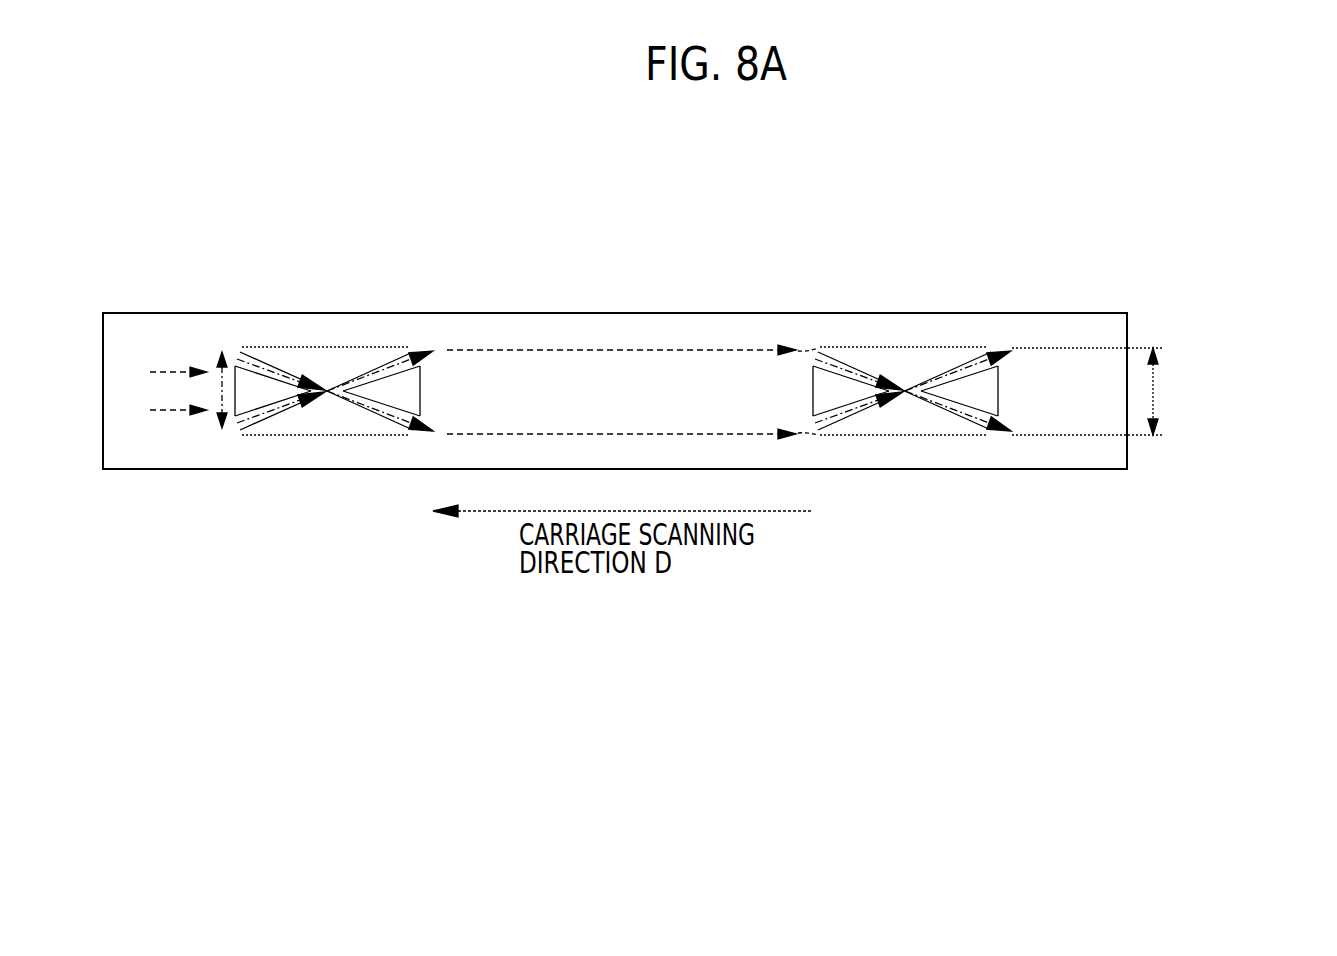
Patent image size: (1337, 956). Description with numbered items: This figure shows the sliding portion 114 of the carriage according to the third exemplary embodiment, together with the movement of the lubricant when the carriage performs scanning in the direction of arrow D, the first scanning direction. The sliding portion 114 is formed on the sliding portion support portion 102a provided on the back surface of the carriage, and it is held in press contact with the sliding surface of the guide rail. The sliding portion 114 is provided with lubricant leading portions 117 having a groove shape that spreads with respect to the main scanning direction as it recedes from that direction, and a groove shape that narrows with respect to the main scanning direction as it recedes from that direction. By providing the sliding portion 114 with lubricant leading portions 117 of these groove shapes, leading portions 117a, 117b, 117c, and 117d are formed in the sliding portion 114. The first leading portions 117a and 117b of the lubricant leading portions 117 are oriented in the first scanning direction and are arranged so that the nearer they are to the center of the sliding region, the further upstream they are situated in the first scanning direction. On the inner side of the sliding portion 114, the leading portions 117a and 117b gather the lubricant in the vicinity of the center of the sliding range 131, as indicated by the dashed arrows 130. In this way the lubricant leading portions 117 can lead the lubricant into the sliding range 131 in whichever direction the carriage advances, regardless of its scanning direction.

The sliding portion support portion 102a is at (788, 333).
The sliding portion 114 is at (245, 368).
The lubricant leading portions 117 is at (622, 391).
The first leading portion 117a is at (264, 350).
The first leading portion 117b is at (282, 422).
The leading portion 117c is at (378, 362).
The leading portion 117d is at (370, 418).
The dashed arrows 130 is at (605, 350).
The sliding range 131 is at (1155, 392).